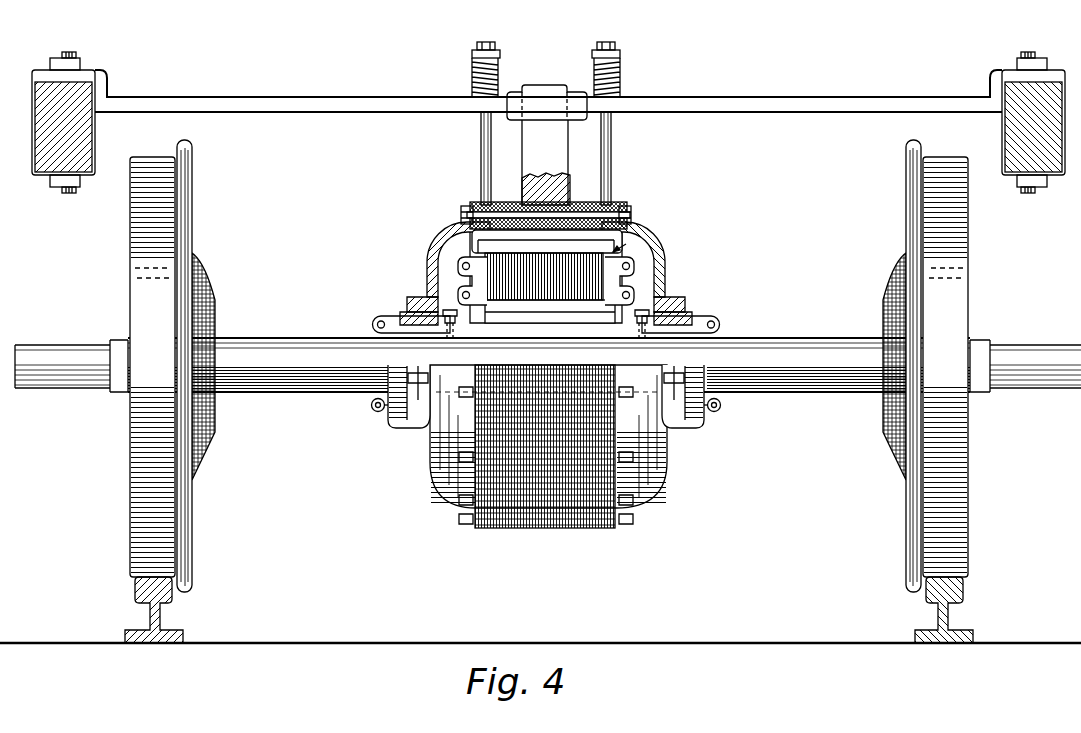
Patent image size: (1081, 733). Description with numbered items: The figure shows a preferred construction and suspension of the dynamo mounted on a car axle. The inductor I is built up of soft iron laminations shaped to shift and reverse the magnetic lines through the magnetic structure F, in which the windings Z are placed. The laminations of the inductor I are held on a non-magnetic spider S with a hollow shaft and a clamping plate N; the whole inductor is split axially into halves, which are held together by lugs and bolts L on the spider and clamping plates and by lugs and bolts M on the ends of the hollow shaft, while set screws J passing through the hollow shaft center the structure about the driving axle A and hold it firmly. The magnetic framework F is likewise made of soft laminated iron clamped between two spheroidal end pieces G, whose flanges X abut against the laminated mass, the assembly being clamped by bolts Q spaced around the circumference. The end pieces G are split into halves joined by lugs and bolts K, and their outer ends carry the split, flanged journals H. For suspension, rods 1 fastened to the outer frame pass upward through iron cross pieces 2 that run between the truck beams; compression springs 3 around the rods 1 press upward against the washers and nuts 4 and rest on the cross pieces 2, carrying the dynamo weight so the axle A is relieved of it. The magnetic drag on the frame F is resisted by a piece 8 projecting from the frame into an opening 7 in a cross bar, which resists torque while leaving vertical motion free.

The rods 1 is at (481, 165).
The cross pieces 2 is at (47, 76).
The compression springs 3 is at (499, 77).
The washers and nuts 4 is at (496, 47).
The opening 7 is at (528, 103).
The piece 8 is at (572, 151).
The flanges X is at (468, 205).
The magnetic structure F is at (577, 205).
The end pieces G is at (432, 258).
The windings Z is at (626, 245).
The inductor I is at (544, 276).
The lugs and bolts L is at (461, 267).
The clamping plate N is at (627, 282).
The set screws J is at (449, 303).
The journals H is at (405, 311).
The spider S is at (403, 321).
The lugs and bolts M is at (373, 322).
The driving axle A is at (548, 365).
The lugs and bolts K is at (410, 418).
The bolts Q is at (462, 394).